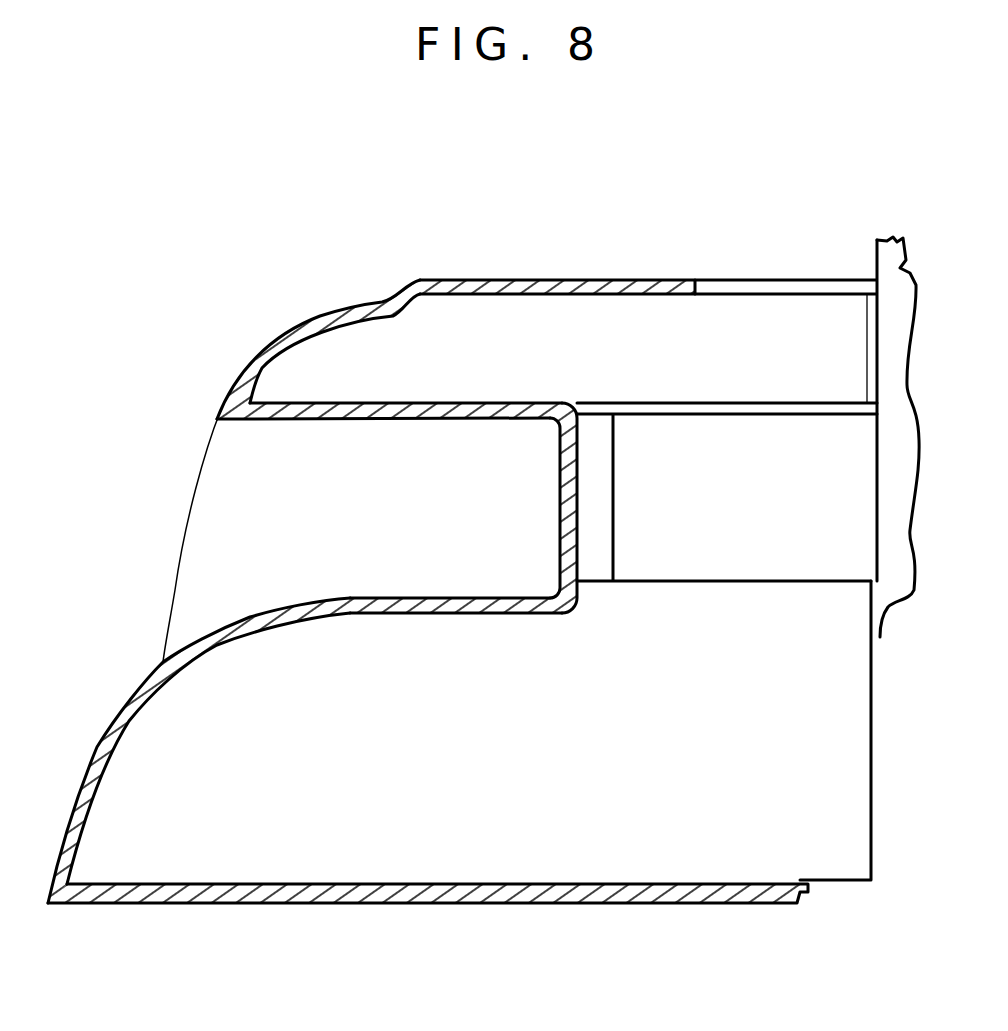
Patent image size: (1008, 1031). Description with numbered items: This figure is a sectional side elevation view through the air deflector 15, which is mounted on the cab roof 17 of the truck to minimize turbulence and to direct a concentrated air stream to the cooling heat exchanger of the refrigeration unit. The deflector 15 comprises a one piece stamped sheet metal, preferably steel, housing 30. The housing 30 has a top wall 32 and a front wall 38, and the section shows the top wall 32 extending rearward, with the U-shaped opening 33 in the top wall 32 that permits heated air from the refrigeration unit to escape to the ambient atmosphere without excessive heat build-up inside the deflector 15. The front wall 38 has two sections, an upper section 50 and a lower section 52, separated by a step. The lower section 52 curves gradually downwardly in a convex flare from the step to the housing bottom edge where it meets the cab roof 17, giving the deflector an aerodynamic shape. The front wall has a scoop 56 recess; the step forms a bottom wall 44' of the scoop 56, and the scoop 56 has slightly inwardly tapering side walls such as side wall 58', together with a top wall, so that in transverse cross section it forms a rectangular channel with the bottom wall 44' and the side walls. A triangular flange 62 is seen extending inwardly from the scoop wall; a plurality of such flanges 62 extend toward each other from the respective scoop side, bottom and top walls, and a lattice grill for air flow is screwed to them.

The air deflector 15 is at (503, 229).
The cab roof 17 is at (390, 905).
The housing 30 is at (360, 272).
The top wall 32 is at (593, 284).
The U-shaped opening 33 is at (738, 284).
The front wall 38 is at (174, 410).
The bottom wall 44' is at (456, 647).
The upper section 50 is at (247, 360).
The lower section 52 is at (162, 665).
The scoop 56 is at (255, 470).
The side wall 58' is at (242, 688).
The triangular flange 62 is at (578, 518).